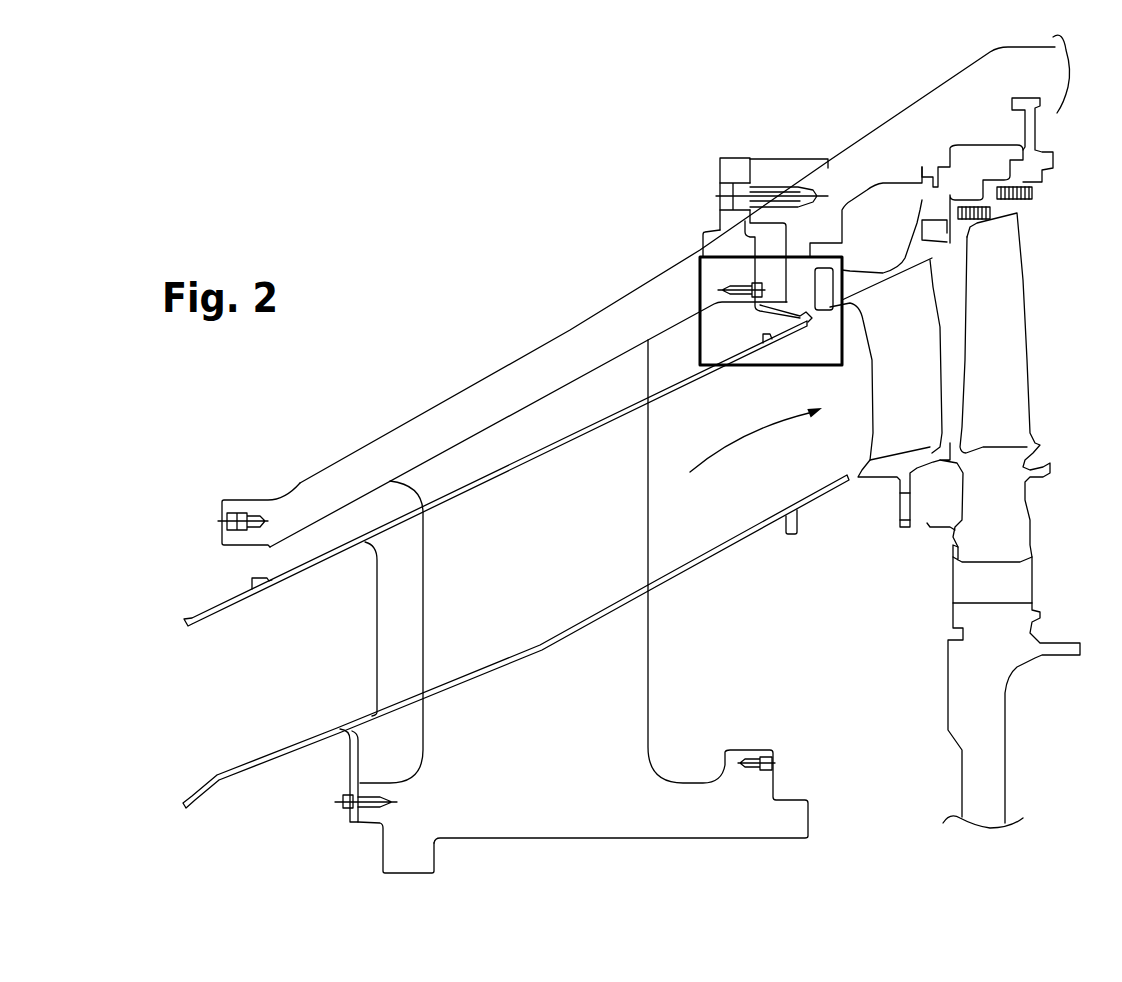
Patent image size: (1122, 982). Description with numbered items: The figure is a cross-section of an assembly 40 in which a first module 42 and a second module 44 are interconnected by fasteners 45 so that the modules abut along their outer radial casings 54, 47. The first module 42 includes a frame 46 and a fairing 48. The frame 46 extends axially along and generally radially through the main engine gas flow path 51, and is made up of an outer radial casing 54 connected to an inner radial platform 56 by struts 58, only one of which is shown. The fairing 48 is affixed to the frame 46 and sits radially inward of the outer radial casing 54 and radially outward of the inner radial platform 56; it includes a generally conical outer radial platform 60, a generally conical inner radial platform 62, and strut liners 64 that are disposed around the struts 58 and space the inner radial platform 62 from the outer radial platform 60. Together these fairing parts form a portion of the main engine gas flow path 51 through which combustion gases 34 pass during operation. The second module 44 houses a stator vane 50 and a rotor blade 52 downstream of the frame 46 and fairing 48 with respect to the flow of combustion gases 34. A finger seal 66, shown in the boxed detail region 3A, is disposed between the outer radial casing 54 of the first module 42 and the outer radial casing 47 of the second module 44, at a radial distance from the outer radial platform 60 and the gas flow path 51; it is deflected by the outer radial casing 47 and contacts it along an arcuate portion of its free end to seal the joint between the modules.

The assembly 40 is at (458, 207).
The first module 42 is at (443, 313).
The frame 46 is at (392, 400).
The second module 44 is at (829, 187).
The fasteners 45 is at (727, 188).
The outer radial casing 47 is at (907, 166).
The stator vane 50 is at (920, 379).
The main engine gas flow path 51 is at (807, 470).
The rotor blade 52 is at (1009, 346).
The outer radial casing 54 is at (302, 495).
The inner radial platform 56 is at (397, 842).
The struts 58 is at (542, 731).
The outer radial platform 60 is at (242, 605).
The inner radial platform 62 is at (263, 755).
The strut liners 64 is at (375, 638).
The finger seal 66 is at (750, 282).
The fairing 48 is at (322, 752).
The combustion gases 34 is at (770, 432).
The detail region of FIG. 3A is at (700, 293).